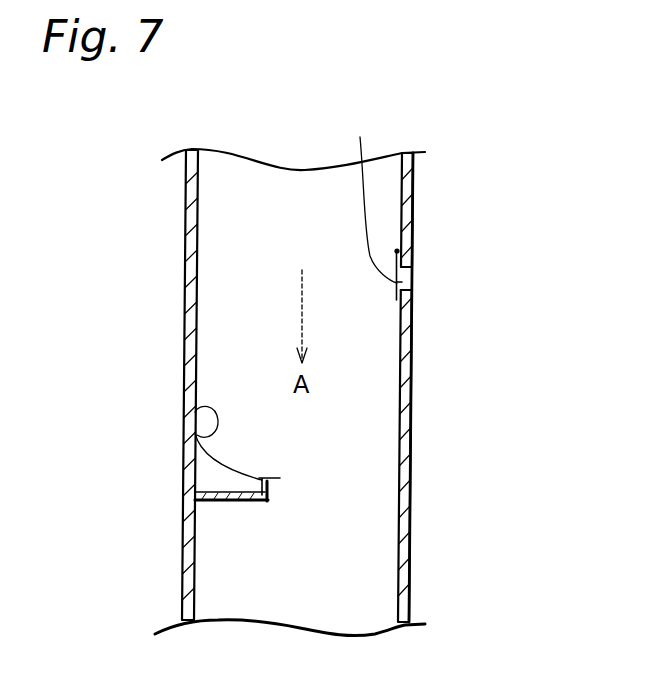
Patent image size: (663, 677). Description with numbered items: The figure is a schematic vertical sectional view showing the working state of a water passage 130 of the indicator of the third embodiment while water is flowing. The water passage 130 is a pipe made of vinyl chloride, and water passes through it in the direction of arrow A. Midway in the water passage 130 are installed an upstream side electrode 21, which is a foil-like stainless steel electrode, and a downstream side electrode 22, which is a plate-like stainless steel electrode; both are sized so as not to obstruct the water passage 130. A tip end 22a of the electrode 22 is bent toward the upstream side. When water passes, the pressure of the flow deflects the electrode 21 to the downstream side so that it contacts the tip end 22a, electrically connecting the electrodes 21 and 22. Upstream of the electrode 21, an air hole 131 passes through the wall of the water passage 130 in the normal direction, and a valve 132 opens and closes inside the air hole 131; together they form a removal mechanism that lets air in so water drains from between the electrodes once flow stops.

The water passage 130 is at (186, 305).
The air hole 131 is at (406, 282).
The valve 132 is at (368, 203).
The upstream side electrode 21 is at (195, 412).
The downstream side electrode 22 is at (228, 503).
The tip end 22a is at (270, 486).